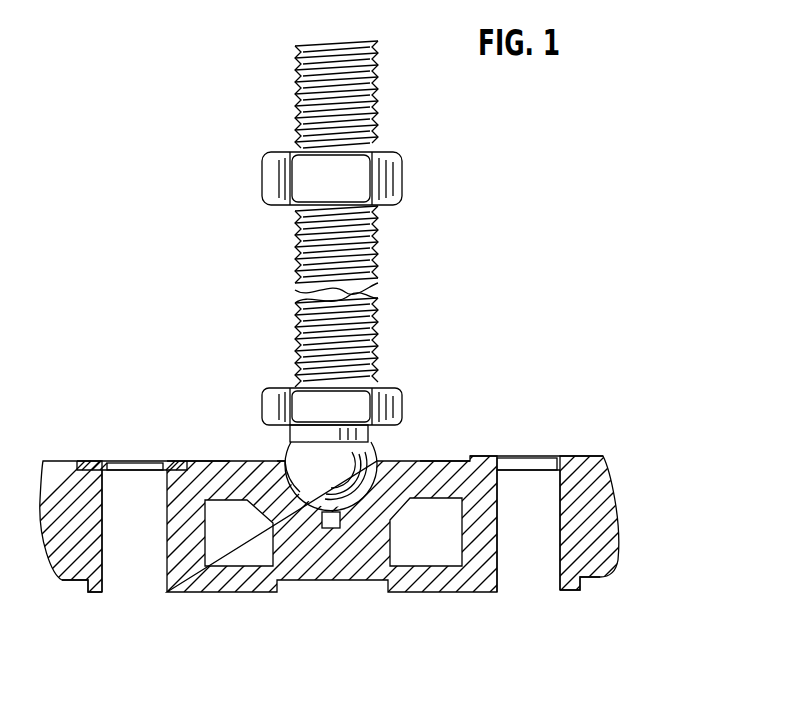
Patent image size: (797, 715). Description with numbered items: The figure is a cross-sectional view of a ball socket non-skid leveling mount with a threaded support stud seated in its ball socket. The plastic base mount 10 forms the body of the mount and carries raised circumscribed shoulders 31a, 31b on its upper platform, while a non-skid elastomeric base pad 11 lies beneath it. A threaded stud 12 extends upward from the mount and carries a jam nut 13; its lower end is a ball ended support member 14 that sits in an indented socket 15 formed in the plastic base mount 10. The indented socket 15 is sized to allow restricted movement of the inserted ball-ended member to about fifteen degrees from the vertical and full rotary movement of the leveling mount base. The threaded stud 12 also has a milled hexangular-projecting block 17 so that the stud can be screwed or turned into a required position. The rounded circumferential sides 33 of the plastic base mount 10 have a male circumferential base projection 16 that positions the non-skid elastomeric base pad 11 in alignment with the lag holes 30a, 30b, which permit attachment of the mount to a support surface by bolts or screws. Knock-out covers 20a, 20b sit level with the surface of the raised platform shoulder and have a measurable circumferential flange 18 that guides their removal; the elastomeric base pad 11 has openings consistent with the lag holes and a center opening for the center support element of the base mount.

The plastic base mount 10 is at (446, 290).
The non-skid elastomeric base pad 11 is at (456, 593).
The threaded stud 12 is at (380, 93).
The jam nut 13 is at (402, 176).
The ball ended support member 14 is at (343, 490).
The indented socket 15 is at (253, 466).
The male circumferential base projection 16 is at (77, 590).
The milled hexangular-projecting block 17 is at (403, 405).
The circumferential flange 18 is at (91, 462).
The knock-out cover 20a is at (137, 462).
The knock-out cover 20b is at (530, 458).
The lag hole 30a is at (145, 550).
The lag hole 30b is at (531, 553).
The raised circumscribed shoulder 31a is at (203, 462).
The raised circumscribed shoulder 31b is at (449, 462).
The rounded circumferential sides 33 is at (45, 468).